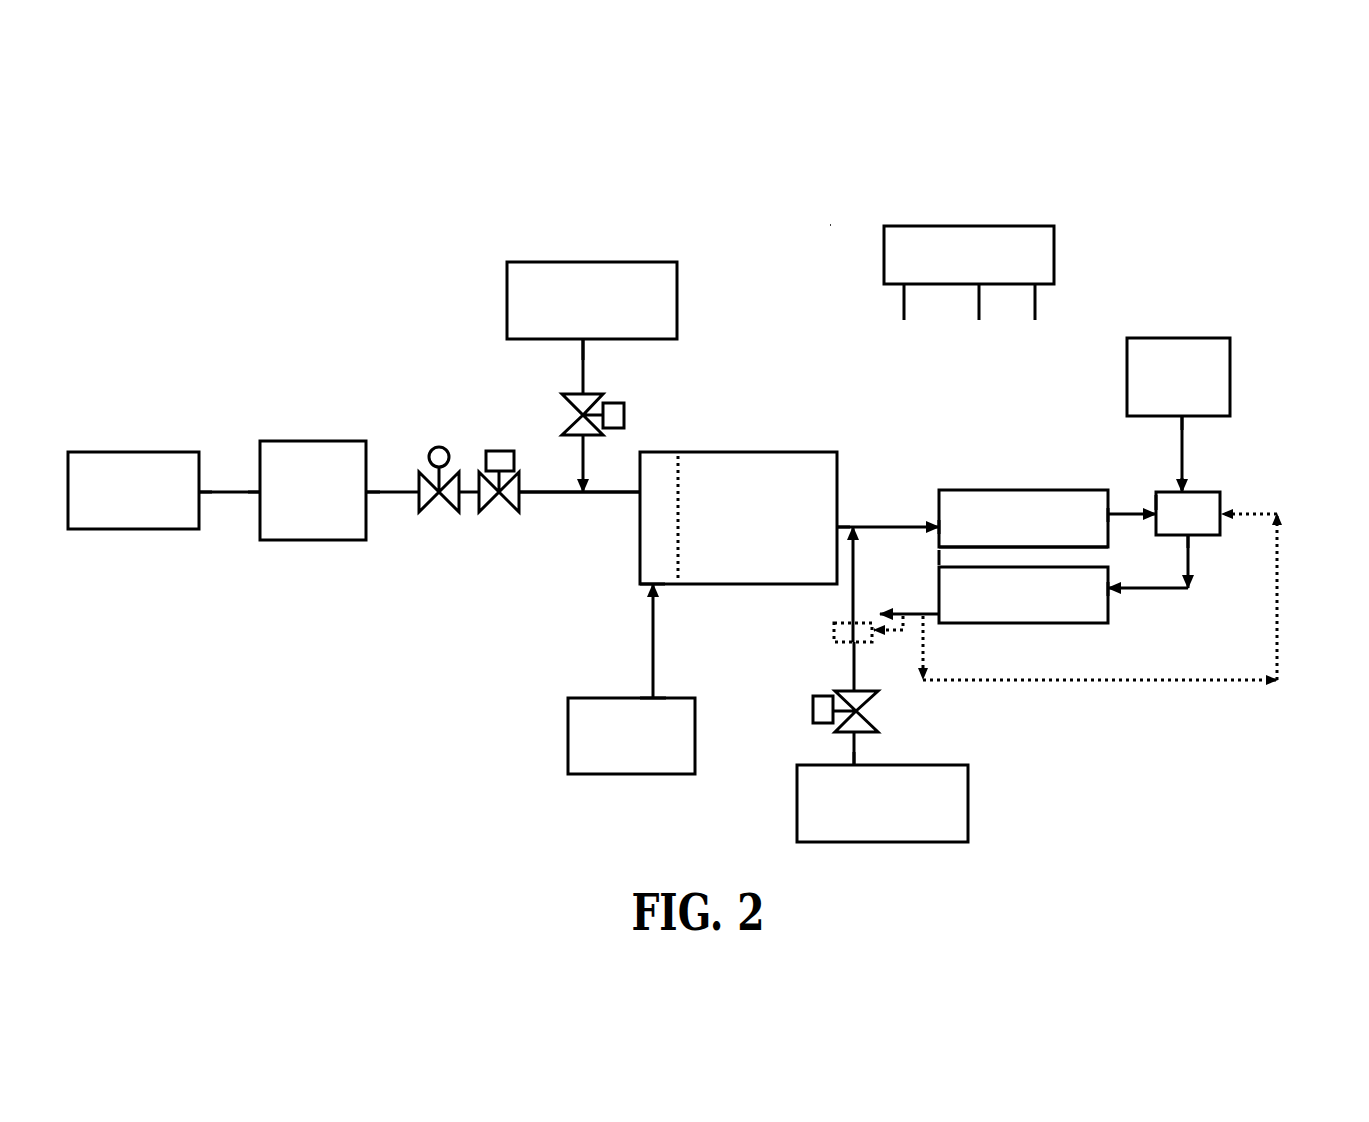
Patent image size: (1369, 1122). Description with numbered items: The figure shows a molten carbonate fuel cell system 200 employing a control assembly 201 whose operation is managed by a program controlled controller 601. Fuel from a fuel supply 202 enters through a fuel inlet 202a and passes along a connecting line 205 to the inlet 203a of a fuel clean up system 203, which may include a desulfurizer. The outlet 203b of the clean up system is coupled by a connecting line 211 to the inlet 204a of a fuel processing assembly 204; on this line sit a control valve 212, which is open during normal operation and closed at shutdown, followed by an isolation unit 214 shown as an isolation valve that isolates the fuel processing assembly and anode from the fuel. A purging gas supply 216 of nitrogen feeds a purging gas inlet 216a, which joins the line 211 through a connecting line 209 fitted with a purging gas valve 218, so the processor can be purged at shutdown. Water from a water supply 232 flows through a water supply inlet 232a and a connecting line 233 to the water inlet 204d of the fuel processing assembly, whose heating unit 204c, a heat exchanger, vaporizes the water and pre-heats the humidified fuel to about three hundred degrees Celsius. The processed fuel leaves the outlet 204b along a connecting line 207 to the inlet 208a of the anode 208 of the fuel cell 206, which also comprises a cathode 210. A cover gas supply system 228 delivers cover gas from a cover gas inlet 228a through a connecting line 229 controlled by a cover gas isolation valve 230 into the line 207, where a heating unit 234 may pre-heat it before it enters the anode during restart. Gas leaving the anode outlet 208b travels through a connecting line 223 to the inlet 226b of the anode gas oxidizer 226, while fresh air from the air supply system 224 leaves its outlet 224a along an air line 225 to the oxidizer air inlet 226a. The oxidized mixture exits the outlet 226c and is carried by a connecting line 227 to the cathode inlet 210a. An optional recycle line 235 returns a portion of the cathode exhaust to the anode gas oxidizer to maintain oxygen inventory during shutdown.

The fuel cell system 200 is at (832, 222).
The control assembly 201 is at (455, 405).
The program controlled controller 601 is at (1000, 226).
The fuel supply 202 is at (160, 452).
The fuel inlet 202a is at (203, 495).
The connecting line 205 is at (226, 490).
The fuel clean up system 203 is at (323, 441).
The inlet of the fuel clean up system 203a is at (256, 497).
The outlet of the fuel clean up system 203b is at (372, 497).
The control valve 212 is at (425, 462).
The isolation unit 214 is at (486, 507).
The connecting line 211 is at (556, 494).
The inlet of the fuel processing assembly 204a is at (630, 494).
The purging gas supply 216 is at (507, 300).
The purging gas inlet 216a is at (584, 348).
The connecting line 209 is at (582, 375).
The purging gas valve 218 is at (566, 420).
The fuel processing assembly 204 is at (746, 452).
The outlet of the fuel processing assembly 204b is at (838, 527).
The heating unit 204c is at (662, 573).
The inlet of the fuel processing assembly 204d is at (652, 590).
The connecting line 207 is at (893, 529).
The connecting line 233 is at (655, 651).
The water supply 232 is at (570, 760).
The water supply inlet 232a is at (645, 697).
The anode 208 is at (1010, 500).
The inlet of the anode 208a is at (938, 520).
The anode outlet 208b is at (1112, 510).
The cathode 210 is at (997, 610).
The cathode inlet 210a is at (1118, 596).
The fuel cell 206 is at (938, 557).
The heating unit 234 is at (835, 633).
The connecting line 229 is at (854, 674).
The cover gas isolation valve 230 is at (879, 710).
The cover gas inlet 228a is at (880, 764).
The cover gas supply system 228 is at (970, 822).
The air supply system 224 is at (1172, 337).
The air supply outlet 224a is at (1178, 418).
The air supply line 225 is at (1184, 456).
The anode gas oxidizer 226 is at (1170, 522).
The air inlet of the anode gas oxidizer 226a is at (1186, 488).
The anode gas inlet of the anode gas oxidizer 226b is at (1151, 500).
The outlet of the anode gas oxidizer 226c is at (1192, 536).
The connecting line 223 is at (1120, 516).
The connecting line 227 is at (1165, 590).
The recycle line 235 is at (1280, 605).